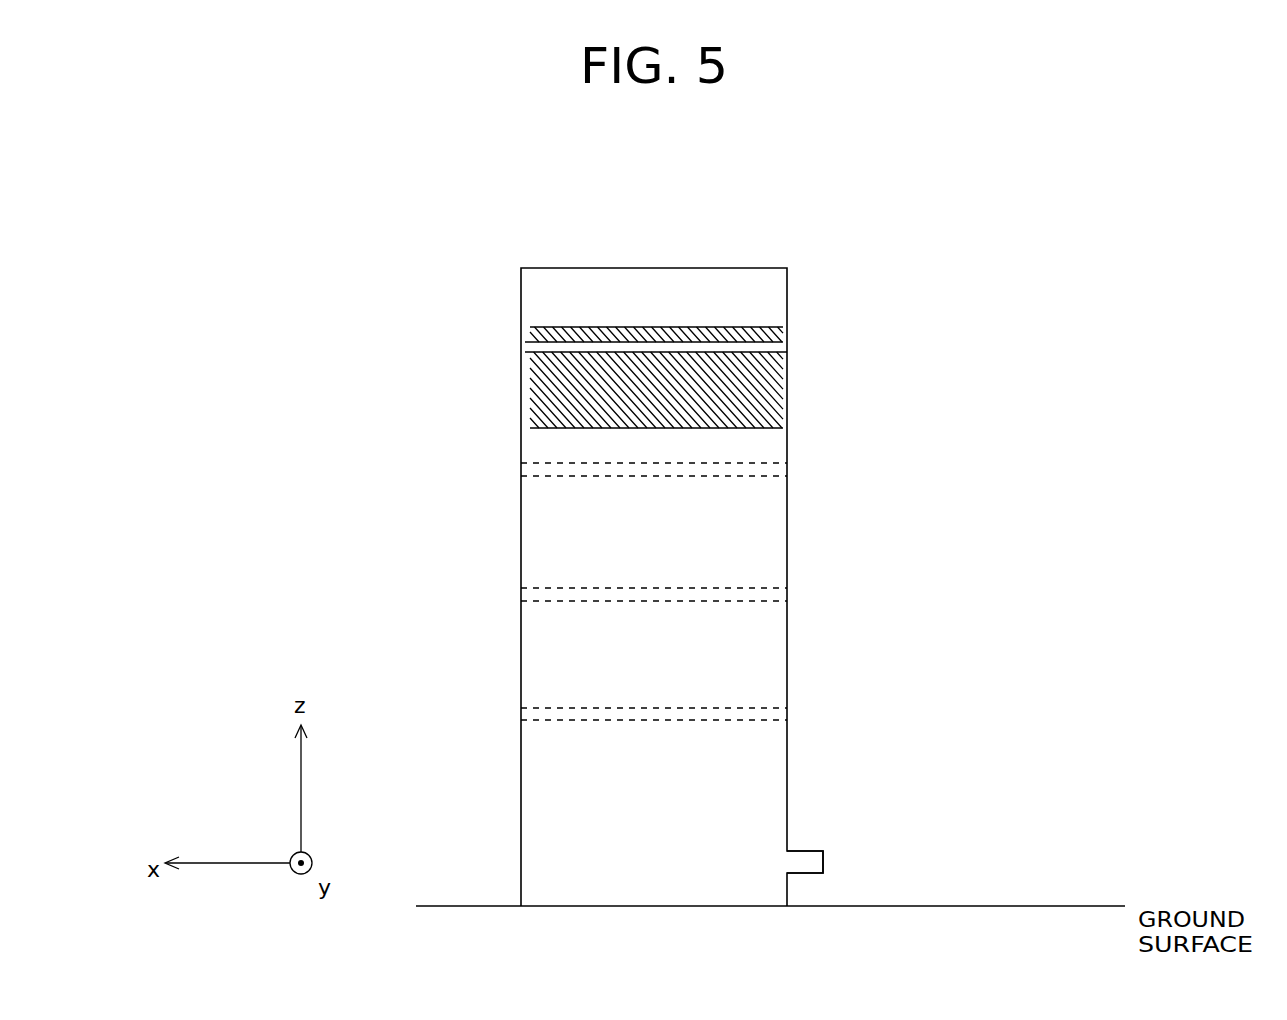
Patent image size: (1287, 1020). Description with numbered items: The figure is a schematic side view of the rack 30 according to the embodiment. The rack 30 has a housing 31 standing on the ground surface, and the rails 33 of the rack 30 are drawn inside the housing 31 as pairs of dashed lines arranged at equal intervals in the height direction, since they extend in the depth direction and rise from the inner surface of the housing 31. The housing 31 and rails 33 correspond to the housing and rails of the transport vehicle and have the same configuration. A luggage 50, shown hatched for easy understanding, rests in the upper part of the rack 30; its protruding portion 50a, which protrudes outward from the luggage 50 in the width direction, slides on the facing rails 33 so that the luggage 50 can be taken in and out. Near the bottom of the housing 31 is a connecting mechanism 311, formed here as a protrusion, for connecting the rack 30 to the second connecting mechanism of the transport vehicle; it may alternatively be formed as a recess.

The rack 30 is at (554, 177).
The housing 31 is at (607, 268).
The connecting mechanism 311 is at (823, 862).
The protruding portion 50a is at (780, 333).
The luggage 50 is at (780, 404).
The rails 33 is at (782, 598).